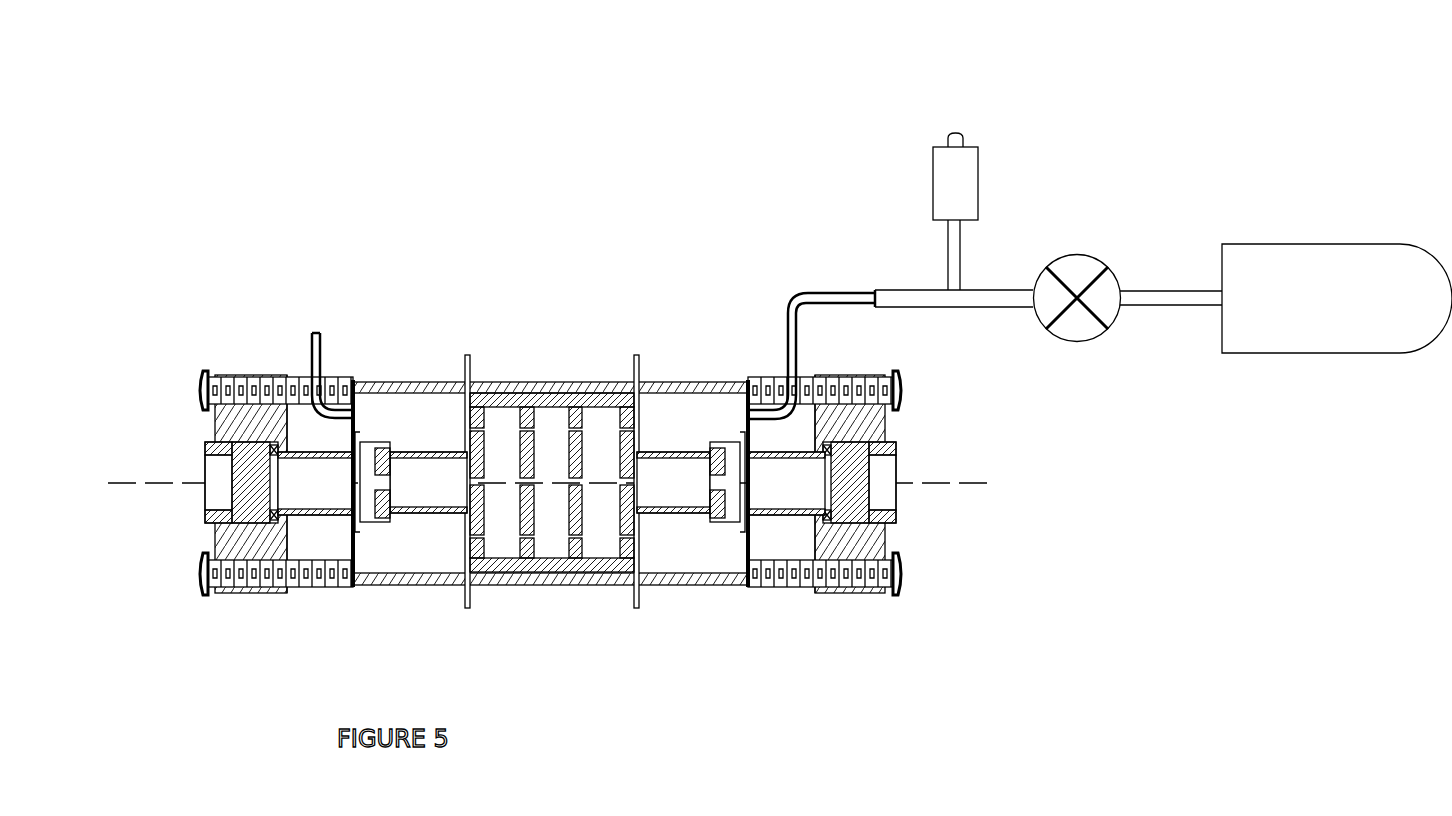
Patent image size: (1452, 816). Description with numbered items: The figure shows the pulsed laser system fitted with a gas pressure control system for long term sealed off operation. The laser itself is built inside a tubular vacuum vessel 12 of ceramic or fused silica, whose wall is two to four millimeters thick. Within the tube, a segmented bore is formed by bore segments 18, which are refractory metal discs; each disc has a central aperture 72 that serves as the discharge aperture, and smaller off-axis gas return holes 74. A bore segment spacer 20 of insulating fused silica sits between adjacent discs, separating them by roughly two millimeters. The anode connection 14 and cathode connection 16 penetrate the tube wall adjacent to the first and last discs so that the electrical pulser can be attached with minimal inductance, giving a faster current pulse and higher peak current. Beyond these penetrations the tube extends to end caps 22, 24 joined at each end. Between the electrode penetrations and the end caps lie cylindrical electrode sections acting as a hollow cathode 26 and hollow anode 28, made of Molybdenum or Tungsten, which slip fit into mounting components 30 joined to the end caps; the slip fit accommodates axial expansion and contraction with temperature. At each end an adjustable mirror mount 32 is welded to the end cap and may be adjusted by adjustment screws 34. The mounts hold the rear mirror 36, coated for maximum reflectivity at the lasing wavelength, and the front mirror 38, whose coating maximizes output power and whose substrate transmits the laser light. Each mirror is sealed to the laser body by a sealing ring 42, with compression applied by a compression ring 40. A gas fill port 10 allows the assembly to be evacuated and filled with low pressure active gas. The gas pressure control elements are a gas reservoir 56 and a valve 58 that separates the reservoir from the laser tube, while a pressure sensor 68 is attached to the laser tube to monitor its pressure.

The gas fill port 10 is at (313, 333).
The tubular vacuum vessel 12 is at (687, 383).
The anode connection 14 is at (467, 608).
The cathode connection 16 is at (633, 610).
The bore segments 18 is at (508, 583).
The bore segment spacer 20 is at (512, 383).
The end cap 22 is at (367, 450).
The end cap 24 is at (743, 587).
The hollow cathode 26 is at (412, 455).
The hollow anode 28 is at (672, 503).
The mounting components 30 is at (763, 375).
The adjustable mirror mount 32 is at (247, 373).
The adjustment screws 34 is at (197, 390).
The rear mirror 36 is at (893, 442).
The front mirror 38 is at (215, 512).
The compression ring 40 is at (197, 427).
The sealing ring 42 is at (273, 393).
The gas reservoir 56 is at (1360, 245).
The valve 58 is at (1100, 248).
The pressure sensor 68 is at (927, 150).
The central aperture 72 is at (553, 383).
The gas return holes 74 is at (625, 383).